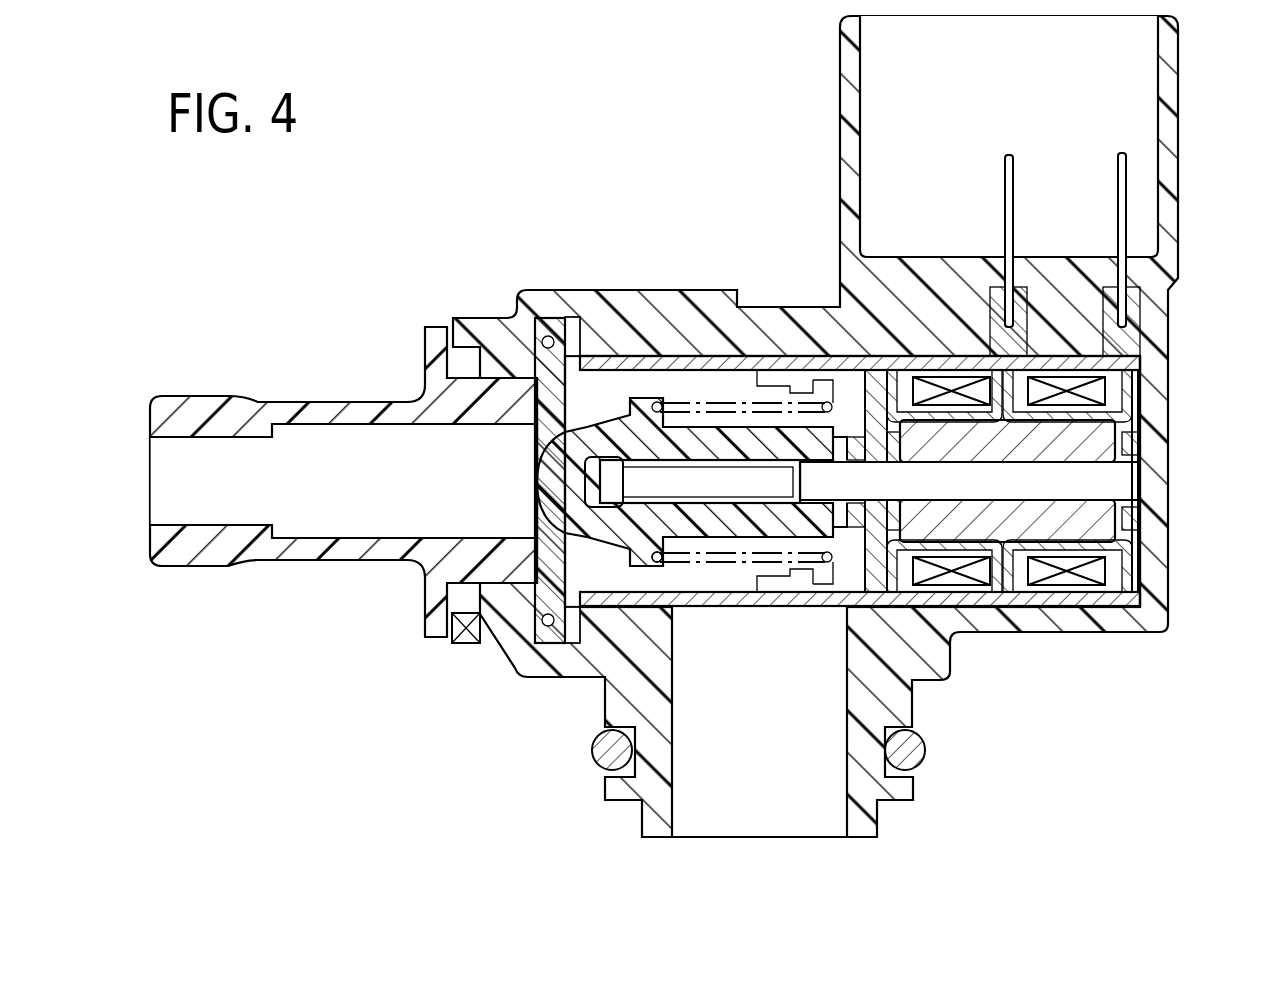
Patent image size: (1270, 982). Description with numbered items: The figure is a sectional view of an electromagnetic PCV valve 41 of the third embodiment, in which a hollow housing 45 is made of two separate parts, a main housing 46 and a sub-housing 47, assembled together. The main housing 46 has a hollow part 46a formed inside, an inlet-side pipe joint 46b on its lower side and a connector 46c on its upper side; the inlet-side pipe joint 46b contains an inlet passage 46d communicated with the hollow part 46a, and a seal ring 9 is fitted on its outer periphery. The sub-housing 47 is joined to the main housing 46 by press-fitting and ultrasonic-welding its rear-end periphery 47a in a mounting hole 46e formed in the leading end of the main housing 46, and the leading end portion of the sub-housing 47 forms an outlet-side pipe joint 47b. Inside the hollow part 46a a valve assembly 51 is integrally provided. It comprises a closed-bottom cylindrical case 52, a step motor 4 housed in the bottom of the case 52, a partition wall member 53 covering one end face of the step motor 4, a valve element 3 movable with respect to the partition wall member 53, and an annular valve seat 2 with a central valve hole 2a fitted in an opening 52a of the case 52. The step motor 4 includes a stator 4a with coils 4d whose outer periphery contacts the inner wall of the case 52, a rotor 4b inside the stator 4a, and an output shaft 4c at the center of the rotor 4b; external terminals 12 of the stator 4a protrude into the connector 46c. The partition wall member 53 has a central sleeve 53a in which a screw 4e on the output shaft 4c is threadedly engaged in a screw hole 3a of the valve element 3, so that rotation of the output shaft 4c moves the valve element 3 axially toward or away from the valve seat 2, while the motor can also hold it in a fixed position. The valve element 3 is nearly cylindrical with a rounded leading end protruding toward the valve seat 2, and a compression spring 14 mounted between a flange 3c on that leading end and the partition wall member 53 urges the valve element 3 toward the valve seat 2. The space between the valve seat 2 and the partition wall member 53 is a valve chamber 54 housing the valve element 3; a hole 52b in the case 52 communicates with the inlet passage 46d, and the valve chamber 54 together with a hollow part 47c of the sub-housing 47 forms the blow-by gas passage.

The electromagnetic PCV valve 41 is at (701, 121).
The housing 45 is at (382, 197).
The main housing 46 is at (518, 290).
The hollow part 46a is at (722, 370).
The inlet-side pipe joint 46b is at (890, 806).
The connector 46c is at (1180, 90).
The inlet passage 46d is at (678, 815).
The mounting hole 46e is at (424, 598).
The sub-housing 47 is at (420, 396).
The rear-end periphery 47a is at (463, 643).
The outlet-side pipe joint 47b is at (212, 568).
The hollow part 47c is at (317, 515).
The valve seat 2 is at (523, 658).
The valve hole 2a is at (510, 647).
The valve element 3 is at (598, 425).
The screw hole 3a is at (733, 505).
The flange 3c is at (632, 398).
The step motor 4 is at (1170, 528).
The stator 4a is at (1046, 632).
The rotor 4b is at (1114, 437).
The output shaft 4c is at (1135, 480).
The coils 4d is at (1098, 390).
The screw 4e is at (771, 528).
The seal ring 9 is at (925, 758).
The external terminals 12 is at (1118, 198).
The compression spring 14 is at (778, 356).
The valve assembly 51 is at (935, 658).
The case 52 is at (676, 372).
The opening 52a is at (553, 333).
The hole 52b is at (832, 608).
The partition wall member 53 is at (846, 393).
The sleeve 53a is at (693, 545).
The valve chamber 54 is at (594, 570).